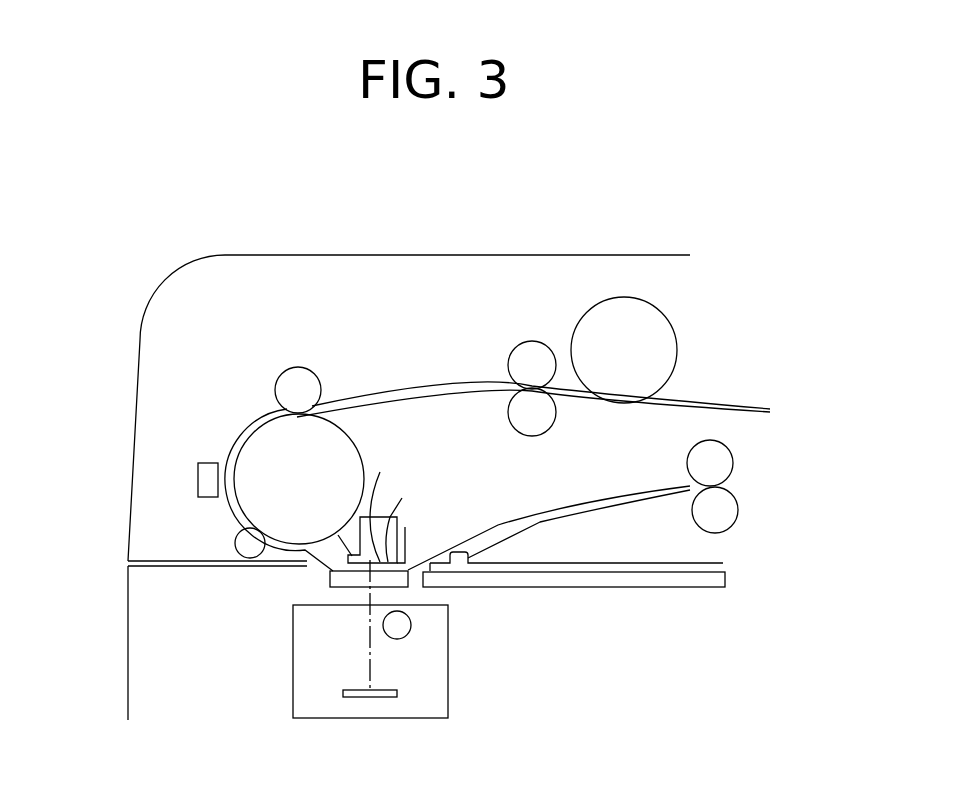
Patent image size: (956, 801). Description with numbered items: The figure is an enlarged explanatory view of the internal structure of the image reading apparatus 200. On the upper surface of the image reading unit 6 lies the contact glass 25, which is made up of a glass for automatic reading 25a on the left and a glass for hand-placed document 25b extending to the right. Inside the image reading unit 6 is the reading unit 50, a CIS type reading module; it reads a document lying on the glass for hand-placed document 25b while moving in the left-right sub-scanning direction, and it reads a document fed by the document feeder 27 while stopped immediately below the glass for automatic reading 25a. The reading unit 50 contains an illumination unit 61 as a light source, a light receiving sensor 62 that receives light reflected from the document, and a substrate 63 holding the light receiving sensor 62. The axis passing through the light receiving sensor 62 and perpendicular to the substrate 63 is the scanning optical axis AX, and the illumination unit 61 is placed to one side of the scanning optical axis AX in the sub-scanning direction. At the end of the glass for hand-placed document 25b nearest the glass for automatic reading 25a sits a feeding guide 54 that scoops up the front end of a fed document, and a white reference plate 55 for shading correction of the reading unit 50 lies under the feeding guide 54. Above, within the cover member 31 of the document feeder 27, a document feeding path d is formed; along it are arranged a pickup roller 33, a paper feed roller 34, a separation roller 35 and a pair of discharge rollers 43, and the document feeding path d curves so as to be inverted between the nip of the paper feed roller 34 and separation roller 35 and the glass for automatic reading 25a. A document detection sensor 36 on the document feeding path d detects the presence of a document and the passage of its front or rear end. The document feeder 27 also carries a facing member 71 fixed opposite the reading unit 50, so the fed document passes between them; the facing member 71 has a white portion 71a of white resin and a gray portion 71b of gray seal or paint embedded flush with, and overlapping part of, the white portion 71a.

The image reading apparatus 200 is at (780, 200).
The cover member 31 is at (223, 255).
The document feeder 27 is at (165, 434).
The image reading unit 6 is at (165, 682).
The document feeding path d is at (243, 430).
The document detection sensor 36 is at (210, 488).
The paper feed roller 34 is at (525, 352).
The separation roller 35 is at (533, 423).
The pickup roller 33 is at (652, 342).
The pair of discharge rollers 43 is at (723, 510).
The facing member 71 is at (404, 495).
The white portion 71a is at (409, 519).
The gray portion 71b is at (390, 502).
The feeding guide 54 is at (453, 553).
The white reference plate 55 is at (452, 568).
The contact glass 25 is at (460, 613).
The glass for automatic reading 25a is at (333, 576).
The glass for hand-placed document 25b is at (603, 580).
The reading unit 50 is at (435, 640).
The scanning optical axis AX is at (368, 628).
The illumination unit 61 is at (398, 630).
The light receiving sensor 62 is at (368, 688).
The substrate 63 is at (350, 697).